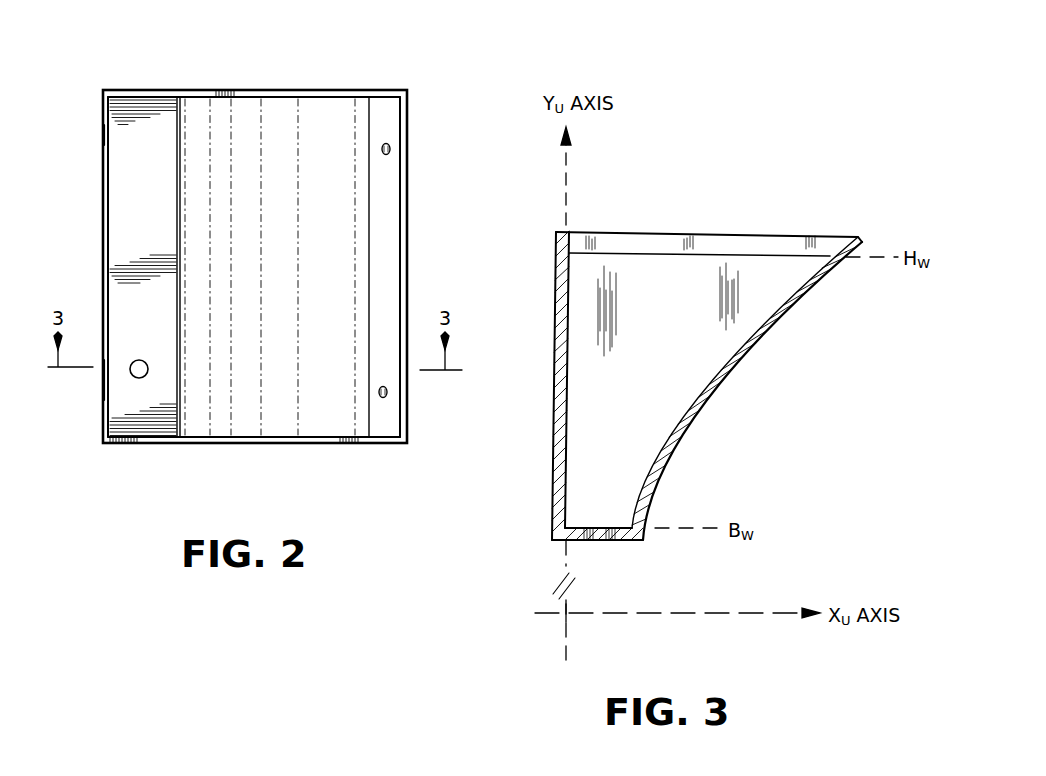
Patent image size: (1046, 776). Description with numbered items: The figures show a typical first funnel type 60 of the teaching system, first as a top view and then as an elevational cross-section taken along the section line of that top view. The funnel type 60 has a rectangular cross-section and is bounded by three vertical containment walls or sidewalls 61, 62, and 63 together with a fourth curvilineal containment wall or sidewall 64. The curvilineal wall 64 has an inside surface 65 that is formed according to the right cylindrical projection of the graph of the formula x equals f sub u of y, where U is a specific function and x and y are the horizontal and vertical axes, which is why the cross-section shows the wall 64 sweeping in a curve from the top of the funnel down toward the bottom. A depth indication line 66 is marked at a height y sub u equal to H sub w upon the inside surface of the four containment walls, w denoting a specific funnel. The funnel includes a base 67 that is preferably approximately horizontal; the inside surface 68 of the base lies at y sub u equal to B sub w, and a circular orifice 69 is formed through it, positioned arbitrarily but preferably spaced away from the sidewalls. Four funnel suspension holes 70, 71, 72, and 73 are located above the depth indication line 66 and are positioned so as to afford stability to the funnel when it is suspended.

In FIG. 2, the first funnel type 60 is at (192, 78).
In FIG. 3, the first funnel type 60 is at (684, 228).
In FIG. 2, the vertical containment wall 61 is at (295, 89).
In FIG. 2, the vertical containment wall 62 is at (104, 179).
In FIG. 3, the vertical containment wall 62 is at (556, 283).
In FIG. 2, the vertical containment wall 63 is at (271, 444).
In FIG. 2, the curvilineal containment wall 64 is at (409, 233).
In FIG. 3, the curvilineal containment wall 64 is at (786, 311).
In FIG. 2, the inside surface 65 is at (289, 246).
In FIG. 3, the inside surface 65 is at (708, 372).
In FIG. 2, the depth indication line 66 is at (368, 301).
In FIG. 3, the depth indication line 66 is at (752, 254).
In FIG. 3, the base 67 is at (625, 542).
In FIG. 2, the inside surface of the base 68 is at (132, 225).
In FIG. 3, the inside surface of the base 68 is at (620, 527).
In FIG. 2, the circular orifice 69 is at (148, 365).
In FIG. 3, the circular orifice 69 is at (598, 527).
In FIG. 2, the funnel suspension hole 70 is at (381, 153).
In FIG. 2, the funnel suspension hole 71 is at (102, 136).
In FIG. 2, the funnel suspension hole 72 is at (102, 390).
In FIG. 2, the funnel suspension hole 73 is at (378, 394).